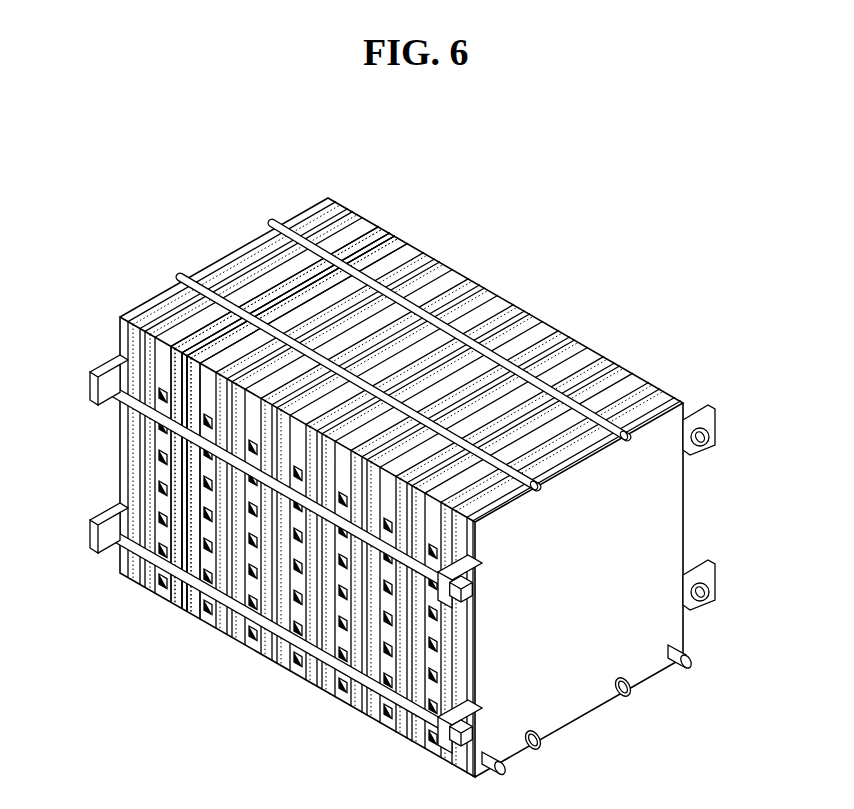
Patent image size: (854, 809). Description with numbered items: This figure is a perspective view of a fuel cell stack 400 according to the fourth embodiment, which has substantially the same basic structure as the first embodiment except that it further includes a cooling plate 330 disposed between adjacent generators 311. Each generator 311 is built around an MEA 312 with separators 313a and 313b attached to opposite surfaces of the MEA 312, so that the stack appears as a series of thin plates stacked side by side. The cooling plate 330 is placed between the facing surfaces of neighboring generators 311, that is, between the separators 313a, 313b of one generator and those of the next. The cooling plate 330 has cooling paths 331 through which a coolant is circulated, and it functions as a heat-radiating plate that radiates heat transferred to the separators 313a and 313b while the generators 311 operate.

The fuel cell stack 400 is at (425, 145).
The generator 311 is at (246, 471).
The MEA 312 is at (183, 608).
The separator 313a is at (177, 596).
The separator 313b is at (290, 470).
The cooling plate 330 is at (286, 561).
The cooling path 331 is at (323, 650).